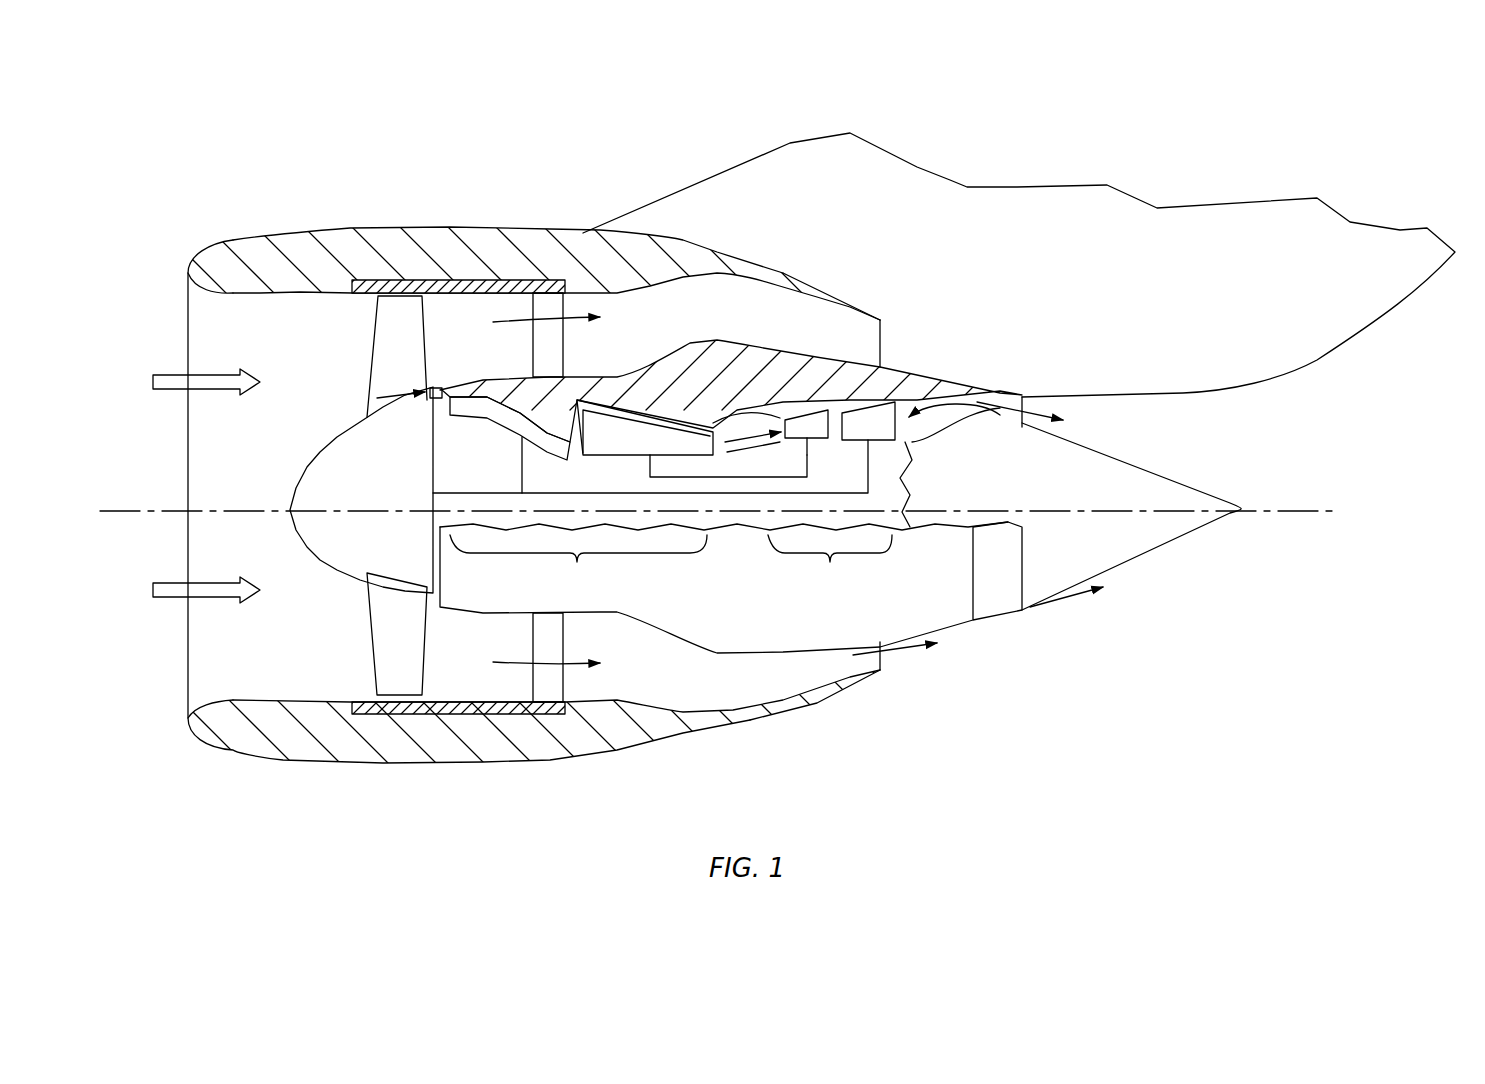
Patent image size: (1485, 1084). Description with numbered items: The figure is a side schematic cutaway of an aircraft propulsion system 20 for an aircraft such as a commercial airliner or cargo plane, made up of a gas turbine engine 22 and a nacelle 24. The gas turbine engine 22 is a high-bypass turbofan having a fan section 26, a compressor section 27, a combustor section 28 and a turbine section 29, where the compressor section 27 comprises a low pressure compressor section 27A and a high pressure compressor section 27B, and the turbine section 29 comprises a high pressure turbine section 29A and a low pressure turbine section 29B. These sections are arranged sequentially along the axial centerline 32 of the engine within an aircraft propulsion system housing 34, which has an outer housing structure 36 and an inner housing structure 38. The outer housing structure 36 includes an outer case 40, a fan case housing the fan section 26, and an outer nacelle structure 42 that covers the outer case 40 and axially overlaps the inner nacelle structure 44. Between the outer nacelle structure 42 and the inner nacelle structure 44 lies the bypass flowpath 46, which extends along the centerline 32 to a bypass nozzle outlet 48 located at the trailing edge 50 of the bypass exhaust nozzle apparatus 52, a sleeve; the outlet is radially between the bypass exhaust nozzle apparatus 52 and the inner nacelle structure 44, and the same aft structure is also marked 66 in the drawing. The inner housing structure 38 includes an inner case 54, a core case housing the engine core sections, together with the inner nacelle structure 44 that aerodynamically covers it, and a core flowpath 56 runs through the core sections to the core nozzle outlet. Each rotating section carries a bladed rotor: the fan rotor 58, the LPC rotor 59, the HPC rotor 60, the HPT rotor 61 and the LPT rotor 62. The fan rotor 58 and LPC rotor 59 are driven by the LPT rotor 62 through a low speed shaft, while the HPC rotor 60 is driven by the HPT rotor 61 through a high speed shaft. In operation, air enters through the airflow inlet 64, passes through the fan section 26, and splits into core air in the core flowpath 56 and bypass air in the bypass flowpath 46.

The aircraft propulsion system 20 is at (228, 192).
The gas turbine engine 22 is at (325, 686).
The nacelle 24 is at (388, 775).
The fan section 26 is at (317, 641).
The compressor section 27 is at (578, 565).
The low pressure compressor section 27A is at (487, 384).
The high pressure compressor section 27B is at (650, 411).
The combustor section 28 is at (745, 414).
The turbine section 29 is at (830, 565).
The high pressure turbine section 29A is at (812, 411).
The low pressure turbine section 29B is at (891, 385).
The axial centerline 32 is at (1328, 512).
The aircraft propulsion system housing 34 is at (444, 211).
The outer housing structure 36 is at (367, 222).
The inner housing structure 38 is at (707, 335).
The outer case 40 is at (477, 279).
The outer nacelle structure 42 is at (297, 229).
The inner nacelle structure 44 is at (677, 647).
The bypass flowpath 46 is at (575, 363).
The bypass nozzle outlet 48 is at (884, 330).
The trailing edge 50 is at (882, 318).
The bypass exhaust nozzle apparatus 52 is at (841, 288).
The inner case 54 is at (530, 398).
The core flowpath 56 is at (940, 436).
The fan rotor 58 is at (360, 588).
The LPC rotor 59 is at (507, 433).
The HPC rotor 60 is at (623, 457).
The HPT rotor 61 is at (810, 440).
The LPT rotor 62 is at (878, 442).
The airflow inlet 64 is at (187, 323).
The variable area nozzle 66 is at (828, 506).